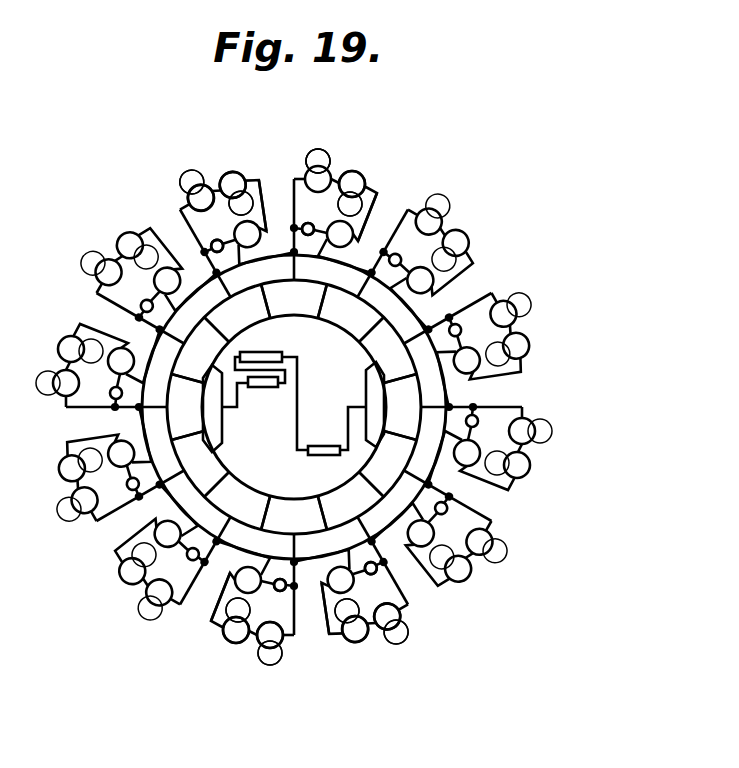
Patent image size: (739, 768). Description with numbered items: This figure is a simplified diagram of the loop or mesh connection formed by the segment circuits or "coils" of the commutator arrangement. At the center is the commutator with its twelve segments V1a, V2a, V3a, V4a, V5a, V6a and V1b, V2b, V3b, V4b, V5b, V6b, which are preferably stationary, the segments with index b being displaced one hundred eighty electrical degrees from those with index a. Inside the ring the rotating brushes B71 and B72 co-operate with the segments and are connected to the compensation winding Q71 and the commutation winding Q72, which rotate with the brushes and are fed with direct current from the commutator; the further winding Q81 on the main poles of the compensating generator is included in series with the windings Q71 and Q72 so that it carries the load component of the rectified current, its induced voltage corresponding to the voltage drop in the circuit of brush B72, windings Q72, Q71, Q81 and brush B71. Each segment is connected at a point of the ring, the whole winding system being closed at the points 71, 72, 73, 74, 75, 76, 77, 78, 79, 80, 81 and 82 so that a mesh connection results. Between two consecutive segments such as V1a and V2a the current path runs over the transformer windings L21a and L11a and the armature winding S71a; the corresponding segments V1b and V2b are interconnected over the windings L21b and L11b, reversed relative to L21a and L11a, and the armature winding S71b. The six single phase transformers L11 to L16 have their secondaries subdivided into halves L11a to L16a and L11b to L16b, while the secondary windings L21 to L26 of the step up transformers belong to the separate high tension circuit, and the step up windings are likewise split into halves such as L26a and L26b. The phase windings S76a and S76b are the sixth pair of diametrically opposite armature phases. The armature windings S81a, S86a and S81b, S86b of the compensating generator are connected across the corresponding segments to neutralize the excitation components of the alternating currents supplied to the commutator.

The closing point 71 is at (294, 275).
The closing point 72 is at (365, 286).
The closing point 73 is at (418, 336).
The closing point 74 is at (441, 407).
The closing point 75 is at (413, 476).
The closing point 76 is at (368, 535).
The closing point 77 is at (294, 553).
The closing point 78 is at (222, 531).
The closing point 79 is at (173, 478).
The closing point 80 is at (156, 407).
The closing point 81 is at (174, 337).
The closing point 82 is at (224, 284).
The commutator segment V1a is at (294, 301).
The commutator segment V2a is at (351, 313).
The commutator segment V3a is at (388, 350).
The commutator segment V4a is at (400, 407).
The commutator segment V5a is at (388, 464).
The commutator segment V6a is at (351, 501).
The commutator segment V1b is at (294, 513).
The commutator segment V2b is at (237, 501).
The commutator segment V3b is at (200, 464).
The commutator segment V4b is at (188, 407).
The commutator segment V5b is at (200, 350).
The commutator segment V6b is at (237, 313).
The brush B71 is at (372, 395).
The brush B72 is at (213, 422).
The compensation winding Q71 is at (258, 352).
The commutation winding Q72 is at (268, 388).
The main pole winding Q81 is at (320, 446).
The single phase transformer L11 is at (362, 204).
The secondary winding half L11a is at (365, 184).
The secondary winding half L11b is at (236, 643).
The single phase transformer L16 is at (246, 191).
The secondary winding half L16a is at (352, 622).
The secondary winding half L16b is at (233, 172).
The step up transformer secondary winding L21 is at (330, 159).
The step up transformer primary winding half L21a is at (317, 149).
The step up transformer primary winding half L21b is at (280, 648).
The step up transformer secondary winding L26 is at (199, 185).
The step up transformer primary winding half L26a is at (400, 617).
The step up transformer primary winding half L26b is at (182, 185).
The armature phase winding S71a is at (369, 216).
The armature phase winding S71b is at (214, 610).
The armature phase winding S76a is at (326, 625).
The armature phase winding S76b is at (270, 180).
The compensating generator armature winding S81a is at (308, 223).
The compensating generator armature winding S81b is at (278, 591).
The compensating generator armature winding S86a is at (371, 575).
The compensating generator armature winding S86b is at (214, 242).